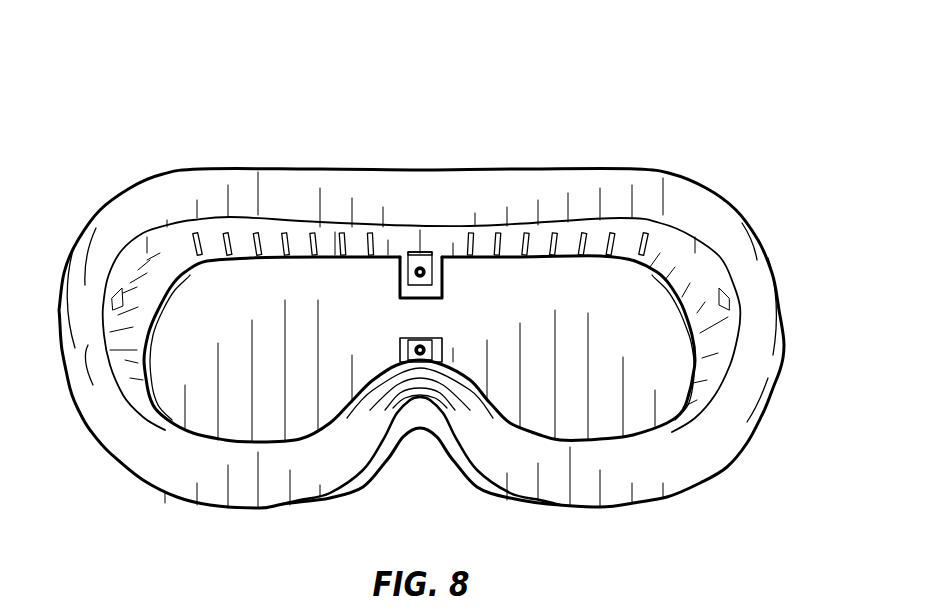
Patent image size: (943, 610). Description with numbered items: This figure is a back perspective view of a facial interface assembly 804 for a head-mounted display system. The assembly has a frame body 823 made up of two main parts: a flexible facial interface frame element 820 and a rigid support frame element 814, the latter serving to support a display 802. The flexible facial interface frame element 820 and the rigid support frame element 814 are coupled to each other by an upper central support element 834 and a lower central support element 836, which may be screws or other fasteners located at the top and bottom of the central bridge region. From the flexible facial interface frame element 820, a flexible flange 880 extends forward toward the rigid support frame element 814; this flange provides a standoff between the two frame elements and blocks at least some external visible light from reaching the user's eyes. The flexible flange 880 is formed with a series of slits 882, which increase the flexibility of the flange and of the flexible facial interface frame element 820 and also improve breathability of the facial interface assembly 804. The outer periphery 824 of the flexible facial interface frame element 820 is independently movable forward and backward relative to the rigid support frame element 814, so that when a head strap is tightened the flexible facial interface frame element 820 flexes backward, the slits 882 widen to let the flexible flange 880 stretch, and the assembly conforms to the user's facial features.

The facial interface assembly 804 is at (88, 79).
The flexible flange 880 is at (148, 253).
The slits 882 is at (314, 232).
The upper central support element 834 is at (429, 240).
The frame body 823 is at (553, 197).
The rigid support frame element 814 is at (628, 262).
The flexible facial interface frame element 820 is at (725, 218).
The outer periphery 824 is at (793, 327).
The lower central support element 836 is at (394, 338).
The display 802 is at (203, 311).